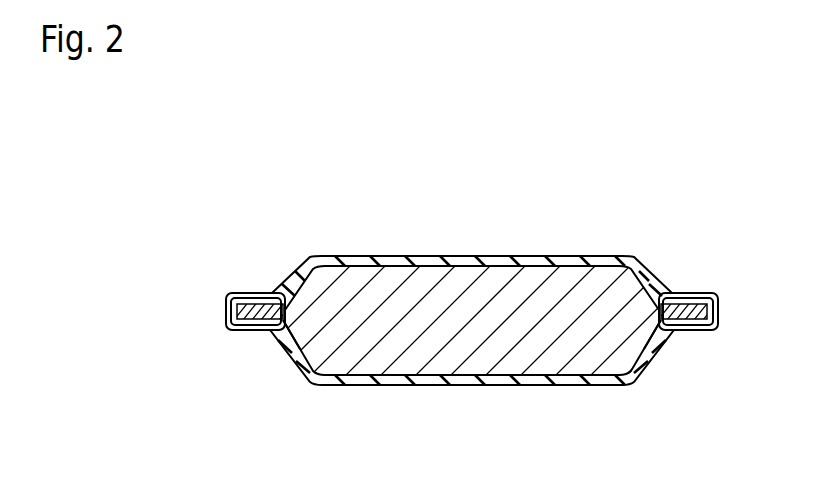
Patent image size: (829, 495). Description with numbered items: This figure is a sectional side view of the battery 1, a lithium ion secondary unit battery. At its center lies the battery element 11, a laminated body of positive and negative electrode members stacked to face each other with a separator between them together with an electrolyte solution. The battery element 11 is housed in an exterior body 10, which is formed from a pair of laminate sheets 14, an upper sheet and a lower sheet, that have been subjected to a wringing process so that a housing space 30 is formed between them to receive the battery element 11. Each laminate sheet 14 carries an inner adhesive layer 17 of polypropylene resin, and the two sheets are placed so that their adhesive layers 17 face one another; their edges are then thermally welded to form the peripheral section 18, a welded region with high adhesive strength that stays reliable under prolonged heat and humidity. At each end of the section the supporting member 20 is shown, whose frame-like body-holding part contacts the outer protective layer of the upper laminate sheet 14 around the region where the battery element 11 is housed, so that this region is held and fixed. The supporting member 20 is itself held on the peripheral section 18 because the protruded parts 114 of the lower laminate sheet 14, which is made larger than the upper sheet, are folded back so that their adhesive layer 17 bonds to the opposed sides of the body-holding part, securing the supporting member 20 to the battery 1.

The battery 1 is at (546, 204).
The exterior body 10 is at (472, 313).
The battery element 11 is at (531, 351).
The laminate sheets 14 is at (393, 257).
The adhesive layer 17 is at (244, 330).
The peripheral section (thermally welded section) 18 is at (270, 332).
The supporting member 20 is at (266, 292).
The housing space 30 is at (354, 362).
The protruded parts 114 is at (230, 292).